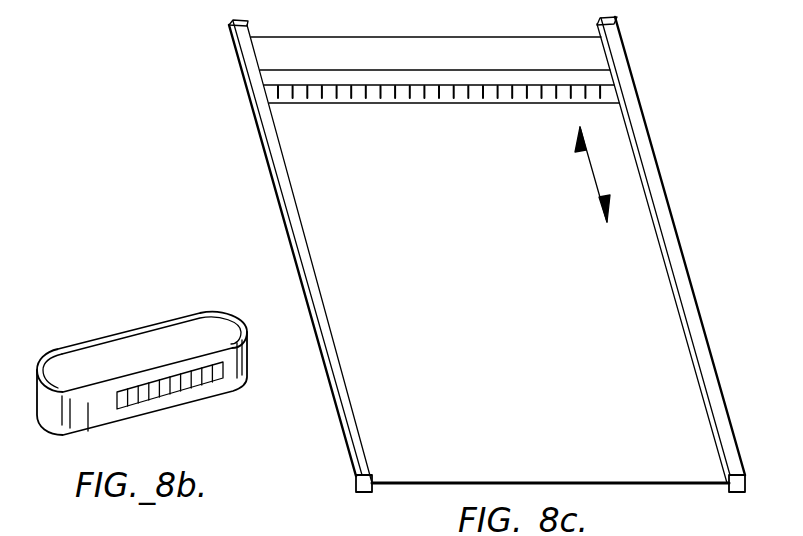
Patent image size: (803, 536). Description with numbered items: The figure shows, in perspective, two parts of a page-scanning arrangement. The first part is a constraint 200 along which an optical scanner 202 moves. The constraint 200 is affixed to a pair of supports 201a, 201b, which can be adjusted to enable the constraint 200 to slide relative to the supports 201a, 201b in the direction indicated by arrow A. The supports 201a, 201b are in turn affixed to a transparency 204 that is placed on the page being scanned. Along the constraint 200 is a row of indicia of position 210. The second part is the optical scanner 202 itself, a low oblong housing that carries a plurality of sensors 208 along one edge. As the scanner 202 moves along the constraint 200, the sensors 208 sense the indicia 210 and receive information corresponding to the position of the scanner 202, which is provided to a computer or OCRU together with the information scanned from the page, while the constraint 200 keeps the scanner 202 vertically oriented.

In FIG. 8C, the constraint 200 is at (402, 78).
In FIG. 8C, the support 201a is at (643, 139).
In FIG. 8C, the support 201b is at (263, 125).
In FIG. 8C, the transparency 204 is at (648, 475).
In FIG. 8C, the indicia of position 210 is at (395, 92).
In FIG. 8B, the optical scanner 202 is at (120, 343).
In FIG. 8B, the sensors 208 is at (160, 390).
In FIG. 8C, the arrow A is at (592, 176).